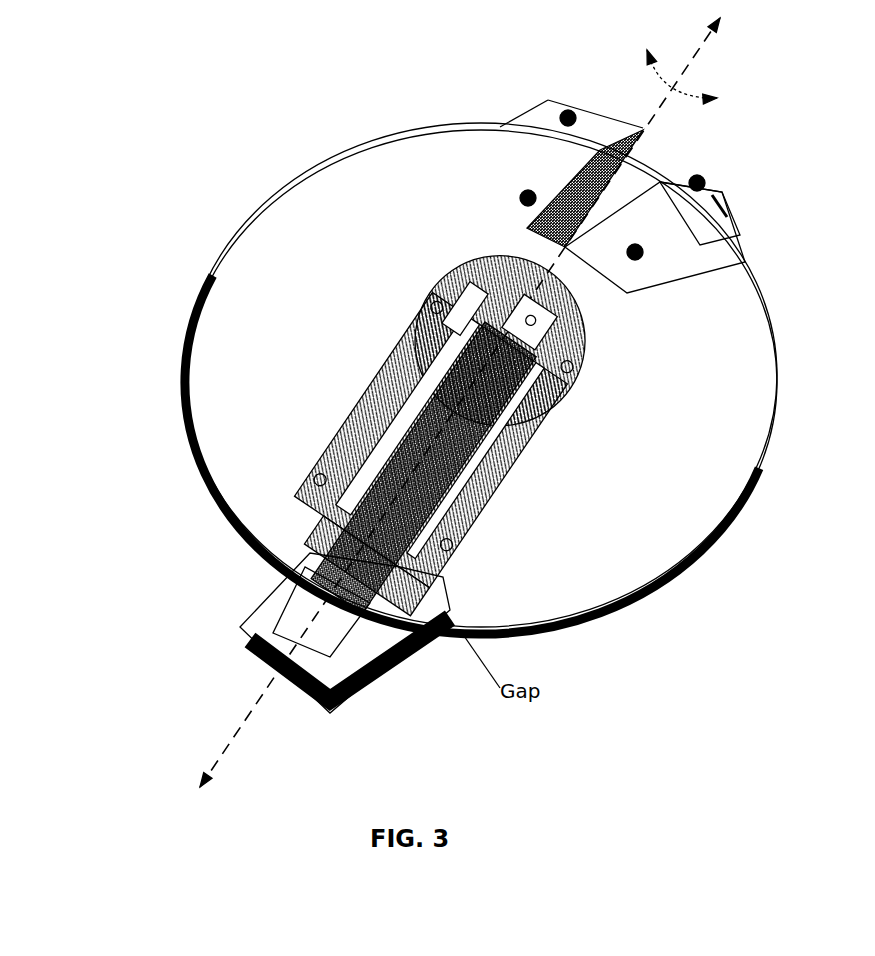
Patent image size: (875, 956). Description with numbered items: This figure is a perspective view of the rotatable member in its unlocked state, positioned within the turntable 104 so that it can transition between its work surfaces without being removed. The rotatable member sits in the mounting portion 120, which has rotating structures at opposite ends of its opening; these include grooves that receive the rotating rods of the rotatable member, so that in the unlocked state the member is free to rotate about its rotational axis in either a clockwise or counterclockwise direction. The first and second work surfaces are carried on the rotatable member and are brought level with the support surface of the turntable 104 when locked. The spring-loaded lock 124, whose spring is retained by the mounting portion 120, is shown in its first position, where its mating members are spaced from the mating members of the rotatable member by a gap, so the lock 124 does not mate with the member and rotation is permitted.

The turntable 104 is at (421, 402).
The mounting portion 120 is at (369, 468).
The lock 124 is at (342, 538).